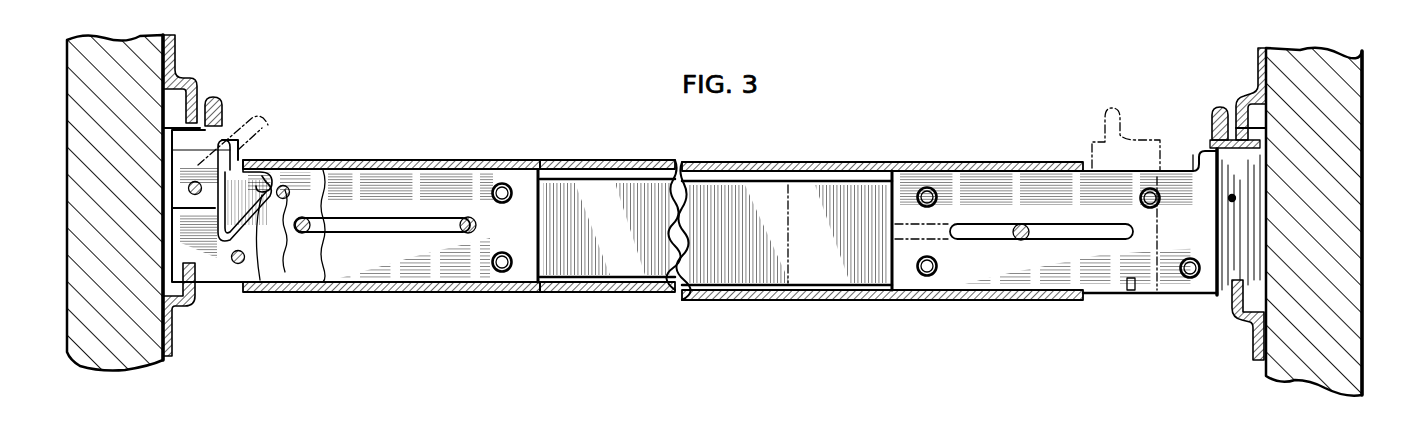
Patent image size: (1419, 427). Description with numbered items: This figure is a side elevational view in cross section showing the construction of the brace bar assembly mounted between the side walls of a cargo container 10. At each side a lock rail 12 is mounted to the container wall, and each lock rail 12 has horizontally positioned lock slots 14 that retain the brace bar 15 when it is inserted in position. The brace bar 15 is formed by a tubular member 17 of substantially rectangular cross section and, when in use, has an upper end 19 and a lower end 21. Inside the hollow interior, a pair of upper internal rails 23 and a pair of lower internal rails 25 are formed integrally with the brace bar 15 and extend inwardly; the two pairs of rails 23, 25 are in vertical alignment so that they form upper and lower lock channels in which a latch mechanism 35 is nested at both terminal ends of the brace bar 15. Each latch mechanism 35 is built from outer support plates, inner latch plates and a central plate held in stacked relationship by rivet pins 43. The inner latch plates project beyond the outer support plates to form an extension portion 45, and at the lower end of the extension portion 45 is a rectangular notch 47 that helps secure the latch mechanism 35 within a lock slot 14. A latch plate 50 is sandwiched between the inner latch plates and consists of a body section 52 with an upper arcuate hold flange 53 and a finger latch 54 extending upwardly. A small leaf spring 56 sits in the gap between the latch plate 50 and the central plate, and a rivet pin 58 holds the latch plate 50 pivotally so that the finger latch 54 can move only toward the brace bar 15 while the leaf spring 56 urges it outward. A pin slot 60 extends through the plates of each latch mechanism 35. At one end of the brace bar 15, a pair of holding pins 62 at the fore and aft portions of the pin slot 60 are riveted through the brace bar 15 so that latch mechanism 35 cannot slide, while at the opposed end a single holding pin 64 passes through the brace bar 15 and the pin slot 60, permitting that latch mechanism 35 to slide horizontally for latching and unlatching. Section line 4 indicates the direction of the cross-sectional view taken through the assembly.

The section line 4- 4 is at (990, 112).
The cargo container 10 is at (1348, 176).
The lock rail 12 is at (175, 48).
The lock slot 14 is at (1226, 143).
The brace bar 15 is at (638, 294).
The tubular member 17 is at (648, 158).
The upper end 19 is at (357, 156).
The lower end 21 is at (403, 292).
The upper internal rails 23 is at (737, 174).
The lower internal rails 25 is at (768, 300).
The latch mechanism 35 is at (468, 188).
The rivet pin 43 is at (508, 190).
The extension portion 45 is at (180, 242).
The rectangular notch 47 is at (198, 290).
The latch plate 50 is at (175, 121).
The body section 52 is at (173, 139).
The upper arcuate hold flange 53 is at (1270, 138).
The finger latch 54 is at (1226, 140).
The leaf spring 56 is at (255, 290).
The rivet pin 58 is at (190, 190).
The pin slot 60 is at (417, 222).
The holding pin 62 is at (310, 289).
The holding pin 64 is at (1030, 237).